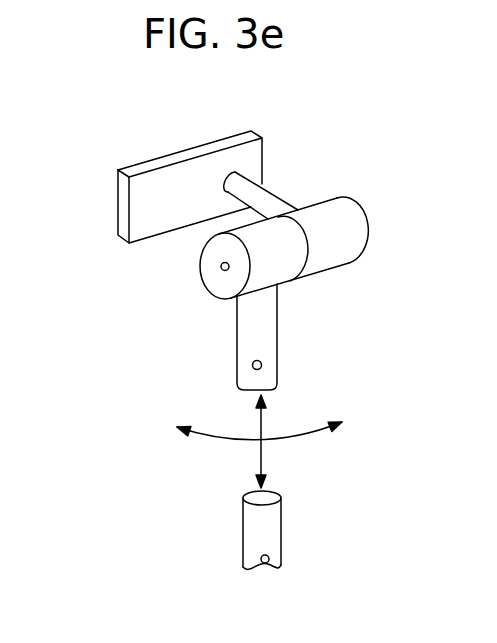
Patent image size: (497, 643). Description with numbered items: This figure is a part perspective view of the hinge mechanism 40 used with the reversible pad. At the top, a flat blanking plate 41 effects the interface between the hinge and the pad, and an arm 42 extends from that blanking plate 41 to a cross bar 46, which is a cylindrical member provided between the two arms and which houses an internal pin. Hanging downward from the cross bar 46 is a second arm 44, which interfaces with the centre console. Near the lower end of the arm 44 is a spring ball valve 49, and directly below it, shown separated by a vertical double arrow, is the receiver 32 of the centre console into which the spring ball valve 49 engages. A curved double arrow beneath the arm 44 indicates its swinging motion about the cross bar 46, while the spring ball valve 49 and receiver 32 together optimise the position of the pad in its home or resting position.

The hinge mechanism 40 is at (100, 190).
The blanking plate 41 is at (250, 157).
The arm 42 is at (278, 203).
The cross bar 46 is at (348, 233).
The arm 44 is at (263, 332).
The spring ball valve 49 is at (262, 365).
The receiver 32 is at (270, 525).